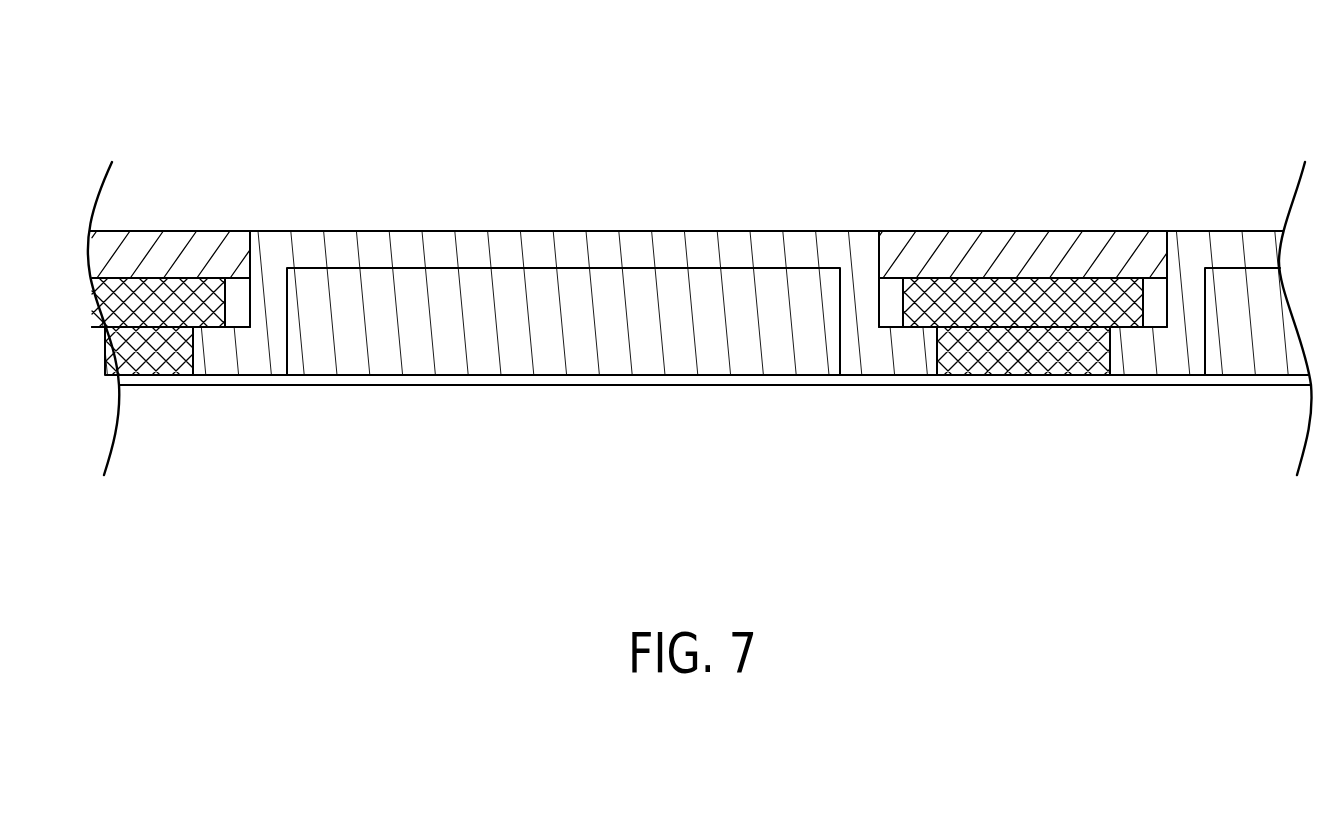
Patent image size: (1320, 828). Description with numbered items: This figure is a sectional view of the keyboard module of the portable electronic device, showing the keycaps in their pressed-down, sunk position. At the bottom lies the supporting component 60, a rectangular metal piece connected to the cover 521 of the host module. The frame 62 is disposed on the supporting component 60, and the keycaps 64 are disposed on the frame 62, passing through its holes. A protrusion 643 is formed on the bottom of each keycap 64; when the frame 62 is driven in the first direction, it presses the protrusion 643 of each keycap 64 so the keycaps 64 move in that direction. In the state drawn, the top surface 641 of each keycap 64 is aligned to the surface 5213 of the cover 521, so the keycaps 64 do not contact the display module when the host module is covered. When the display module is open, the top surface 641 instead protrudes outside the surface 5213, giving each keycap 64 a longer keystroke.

The supporting component 60 is at (582, 377).
The frame 62 is at (167, 302).
The keycap 64 is at (573, 255).
The top surface of keycap 641 is at (732, 231).
The protrusion 643 is at (225, 360).
The cover 521 is at (191, 257).
The surface of cover 5213 is at (1128, 231).